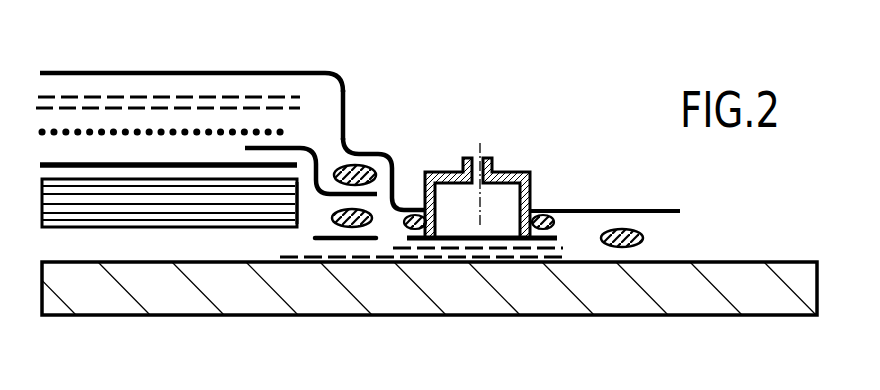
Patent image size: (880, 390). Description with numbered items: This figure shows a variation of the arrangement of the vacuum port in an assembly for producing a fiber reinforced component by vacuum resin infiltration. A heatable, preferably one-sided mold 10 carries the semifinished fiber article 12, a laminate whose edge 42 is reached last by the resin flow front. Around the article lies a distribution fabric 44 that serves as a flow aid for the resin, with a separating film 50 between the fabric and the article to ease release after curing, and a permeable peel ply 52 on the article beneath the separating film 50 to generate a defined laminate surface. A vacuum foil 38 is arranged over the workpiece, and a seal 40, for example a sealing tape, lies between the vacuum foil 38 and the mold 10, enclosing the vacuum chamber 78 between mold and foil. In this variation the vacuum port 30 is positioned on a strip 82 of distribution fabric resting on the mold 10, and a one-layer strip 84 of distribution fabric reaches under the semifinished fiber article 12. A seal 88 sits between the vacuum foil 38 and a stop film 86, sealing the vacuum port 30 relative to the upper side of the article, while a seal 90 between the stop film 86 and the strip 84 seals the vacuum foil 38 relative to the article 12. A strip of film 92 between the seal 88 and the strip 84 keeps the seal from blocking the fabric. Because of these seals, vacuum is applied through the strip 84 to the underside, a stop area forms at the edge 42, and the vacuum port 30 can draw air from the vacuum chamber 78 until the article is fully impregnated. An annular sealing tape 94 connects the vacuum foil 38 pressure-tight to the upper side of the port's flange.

The mold 10 is at (607, 290).
The semifinished fiber article 12 is at (147, 210).
The vacuum port 30 is at (531, 167).
The vacuum foil 38 is at (333, 72).
The seal 40 is at (644, 240).
The edge 42 is at (303, 208).
The distribution fabric 44 is at (157, 97).
The separating film 50 is at (263, 128).
The peel ply 52 is at (182, 162).
The vacuum chamber 78 is at (73, 247).
The strip of distribution fabric 82 is at (463, 248).
The strip of distribution fabric 84 is at (405, 257).
The stop film 86 is at (342, 132).
The seal 88 is at (376, 153).
The seal 90 is at (361, 226).
The strip of film 92 is at (318, 240).
The annular sealing tape 94 is at (548, 217).